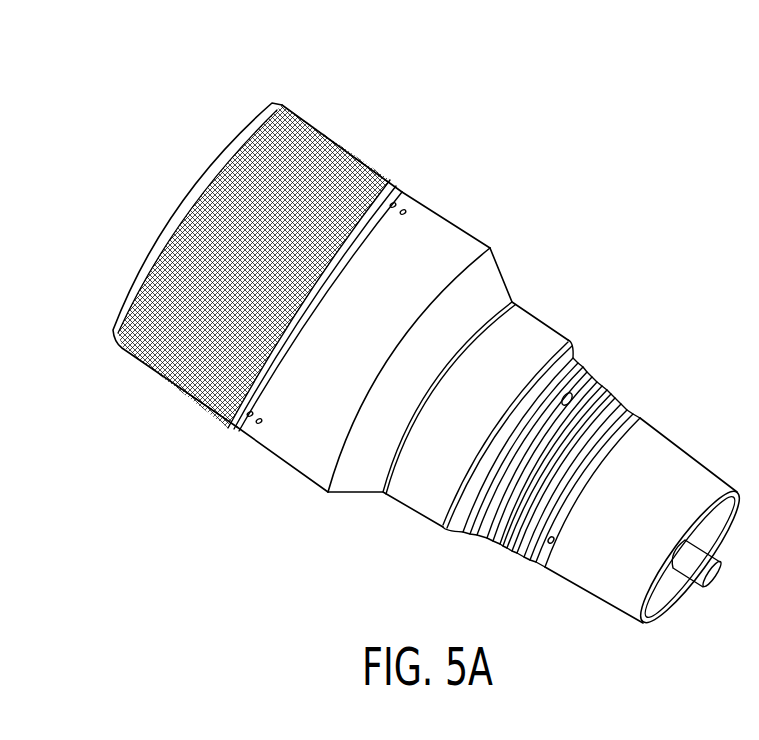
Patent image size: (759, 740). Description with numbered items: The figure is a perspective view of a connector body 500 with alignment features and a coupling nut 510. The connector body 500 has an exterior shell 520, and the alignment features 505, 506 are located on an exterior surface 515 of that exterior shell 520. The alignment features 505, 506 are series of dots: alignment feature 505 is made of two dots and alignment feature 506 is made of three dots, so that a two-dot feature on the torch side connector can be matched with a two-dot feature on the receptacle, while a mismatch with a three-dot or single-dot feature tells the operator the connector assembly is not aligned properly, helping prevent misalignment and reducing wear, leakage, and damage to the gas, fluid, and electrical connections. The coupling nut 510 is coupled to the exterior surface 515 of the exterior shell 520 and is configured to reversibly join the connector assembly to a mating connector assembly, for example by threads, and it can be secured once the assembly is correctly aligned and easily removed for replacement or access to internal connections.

The connector body 500 is at (130, 133).
The alignment feature 505 is at (252, 421).
The alignment feature 506 is at (397, 203).
The coupling nut 510 is at (331, 154).
The exterior surface 515 is at (450, 236).
The exterior shell 520 is at (356, 476).